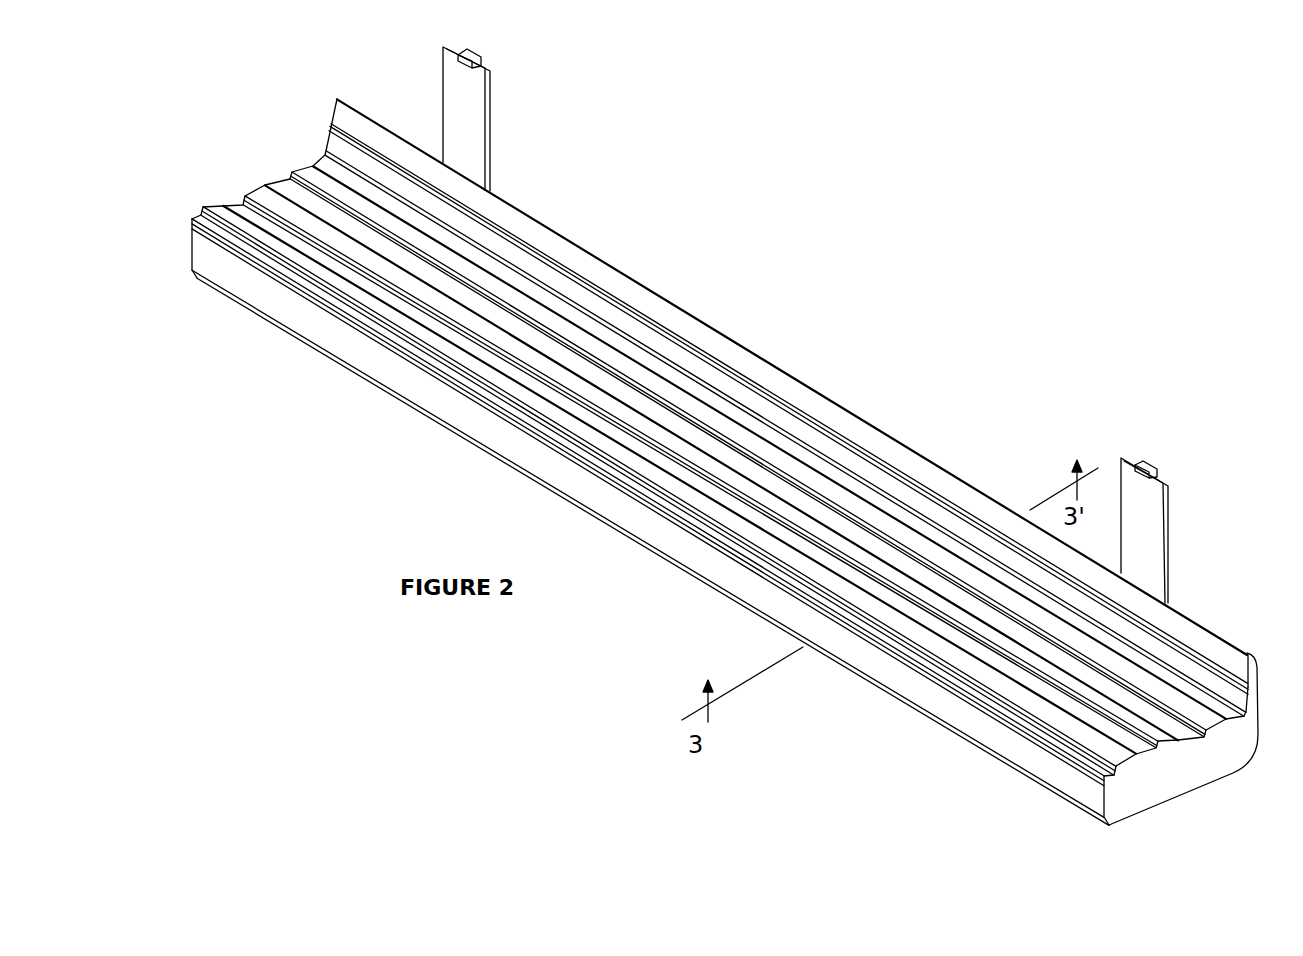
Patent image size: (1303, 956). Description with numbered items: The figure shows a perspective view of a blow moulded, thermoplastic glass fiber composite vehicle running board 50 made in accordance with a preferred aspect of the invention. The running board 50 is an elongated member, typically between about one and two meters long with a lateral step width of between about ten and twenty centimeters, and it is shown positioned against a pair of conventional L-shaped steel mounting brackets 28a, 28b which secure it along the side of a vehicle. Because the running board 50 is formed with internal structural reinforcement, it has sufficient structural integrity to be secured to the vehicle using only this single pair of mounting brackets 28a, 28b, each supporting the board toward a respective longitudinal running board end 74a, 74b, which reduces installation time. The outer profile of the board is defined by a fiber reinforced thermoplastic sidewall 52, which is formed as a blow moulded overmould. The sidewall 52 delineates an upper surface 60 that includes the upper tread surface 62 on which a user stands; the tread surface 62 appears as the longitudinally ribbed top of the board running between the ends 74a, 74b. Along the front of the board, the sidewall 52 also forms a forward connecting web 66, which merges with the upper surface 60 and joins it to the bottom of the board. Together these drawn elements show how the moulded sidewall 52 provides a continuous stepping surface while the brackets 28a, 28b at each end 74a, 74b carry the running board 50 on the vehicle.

The vehicle running board 50 is at (757, 184).
The sidewall 52 is at (958, 706).
The upper surface 60 is at (777, 493).
The upper tread surface 62 is at (280, 200).
The forward connecting web 66 is at (318, 325).
The running board end 74a is at (240, 197).
The running board end 74b is at (1138, 787).
The L-shaped steel mounting bracket 28a is at (477, 93).
The L-shaped steel mounting bracket 28b is at (1158, 508).